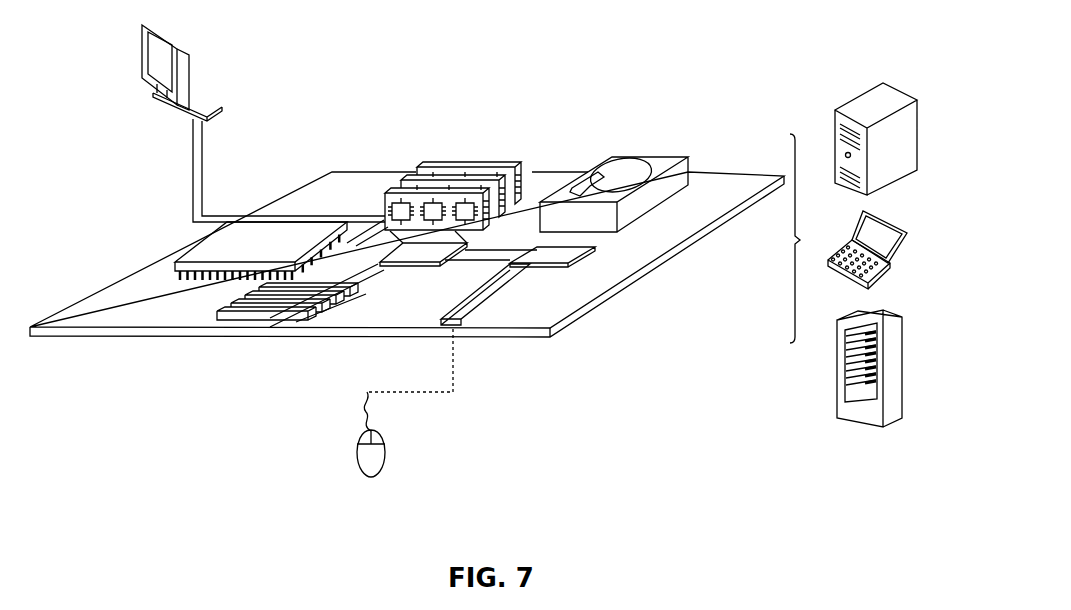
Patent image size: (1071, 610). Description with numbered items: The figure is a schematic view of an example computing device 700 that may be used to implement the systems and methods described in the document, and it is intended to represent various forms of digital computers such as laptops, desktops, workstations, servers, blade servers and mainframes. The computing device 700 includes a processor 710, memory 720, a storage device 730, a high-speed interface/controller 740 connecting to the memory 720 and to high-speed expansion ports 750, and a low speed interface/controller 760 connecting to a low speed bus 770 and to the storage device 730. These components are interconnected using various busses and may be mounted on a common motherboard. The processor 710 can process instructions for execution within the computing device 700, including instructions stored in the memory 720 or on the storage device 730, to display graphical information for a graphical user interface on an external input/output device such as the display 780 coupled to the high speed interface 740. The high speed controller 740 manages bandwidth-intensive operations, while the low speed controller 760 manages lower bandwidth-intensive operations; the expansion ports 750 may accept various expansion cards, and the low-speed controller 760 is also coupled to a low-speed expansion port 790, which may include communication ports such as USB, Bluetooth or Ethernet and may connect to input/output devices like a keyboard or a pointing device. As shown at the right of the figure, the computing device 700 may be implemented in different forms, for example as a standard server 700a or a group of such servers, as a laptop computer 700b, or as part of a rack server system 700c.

The computing device 700 is at (522, 66).
The standard server 700a is at (851, 97).
The laptop computer 700b is at (896, 229).
The rack server system 700c is at (896, 352).
The processor 710 is at (174, 262).
The memory 720 is at (462, 168).
The storage device 730 is at (648, 154).
The high-speed interface/controller 740 is at (428, 264).
The high-speed expansion ports 750 is at (218, 312).
The low speed interface/controller 760 is at (545, 252).
The low speed bus 770 is at (513, 292).
The display 780 is at (142, 50).
The low-speed expansion port 790 is at (458, 328).